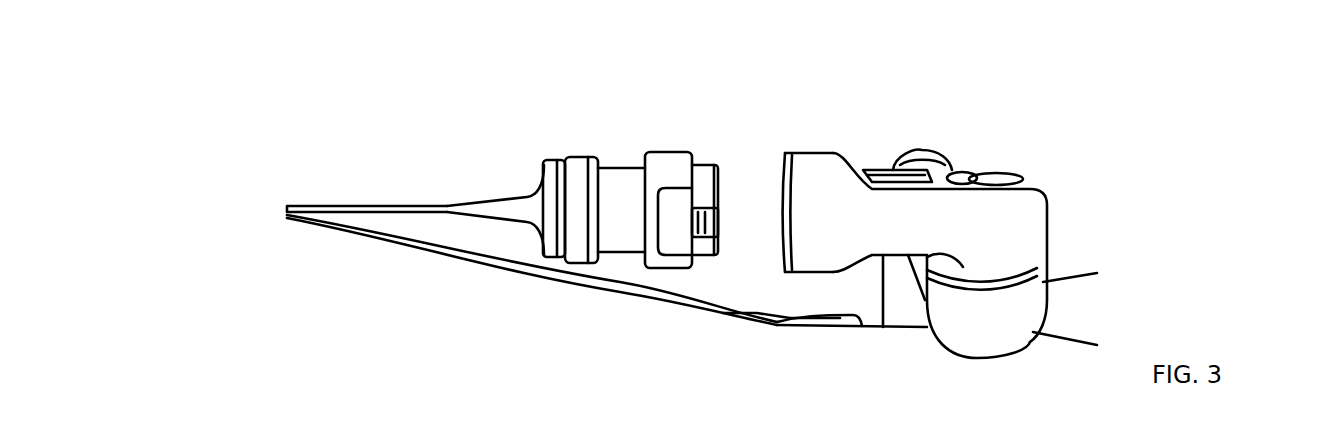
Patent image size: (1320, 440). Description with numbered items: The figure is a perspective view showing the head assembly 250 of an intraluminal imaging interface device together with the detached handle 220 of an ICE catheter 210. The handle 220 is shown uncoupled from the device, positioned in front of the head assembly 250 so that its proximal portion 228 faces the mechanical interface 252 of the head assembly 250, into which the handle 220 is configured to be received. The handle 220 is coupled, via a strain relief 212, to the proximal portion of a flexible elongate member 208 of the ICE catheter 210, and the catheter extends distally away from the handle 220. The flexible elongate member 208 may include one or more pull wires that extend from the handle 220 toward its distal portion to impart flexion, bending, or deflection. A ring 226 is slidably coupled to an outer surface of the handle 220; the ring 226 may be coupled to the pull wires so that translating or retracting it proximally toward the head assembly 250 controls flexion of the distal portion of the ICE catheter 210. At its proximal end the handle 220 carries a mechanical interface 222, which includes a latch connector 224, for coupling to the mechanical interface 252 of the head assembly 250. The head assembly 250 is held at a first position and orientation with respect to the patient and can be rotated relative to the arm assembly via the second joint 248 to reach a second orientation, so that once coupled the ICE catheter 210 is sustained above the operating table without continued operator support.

The ICE catheter 210 is at (262, 110).
The flexible elongate member 208 is at (375, 205).
The strain relief 212 is at (477, 205).
The handle 220 is at (627, 149).
The ring 226 is at (582, 155).
The proximal portion 228 is at (705, 163).
The mechanical interface 222 is at (731, 212).
The latch connector 224 is at (707, 257).
The head assembly 250 is at (827, 132).
The mechanical interface 252 is at (777, 182).
The second joint 248 is at (1023, 270).